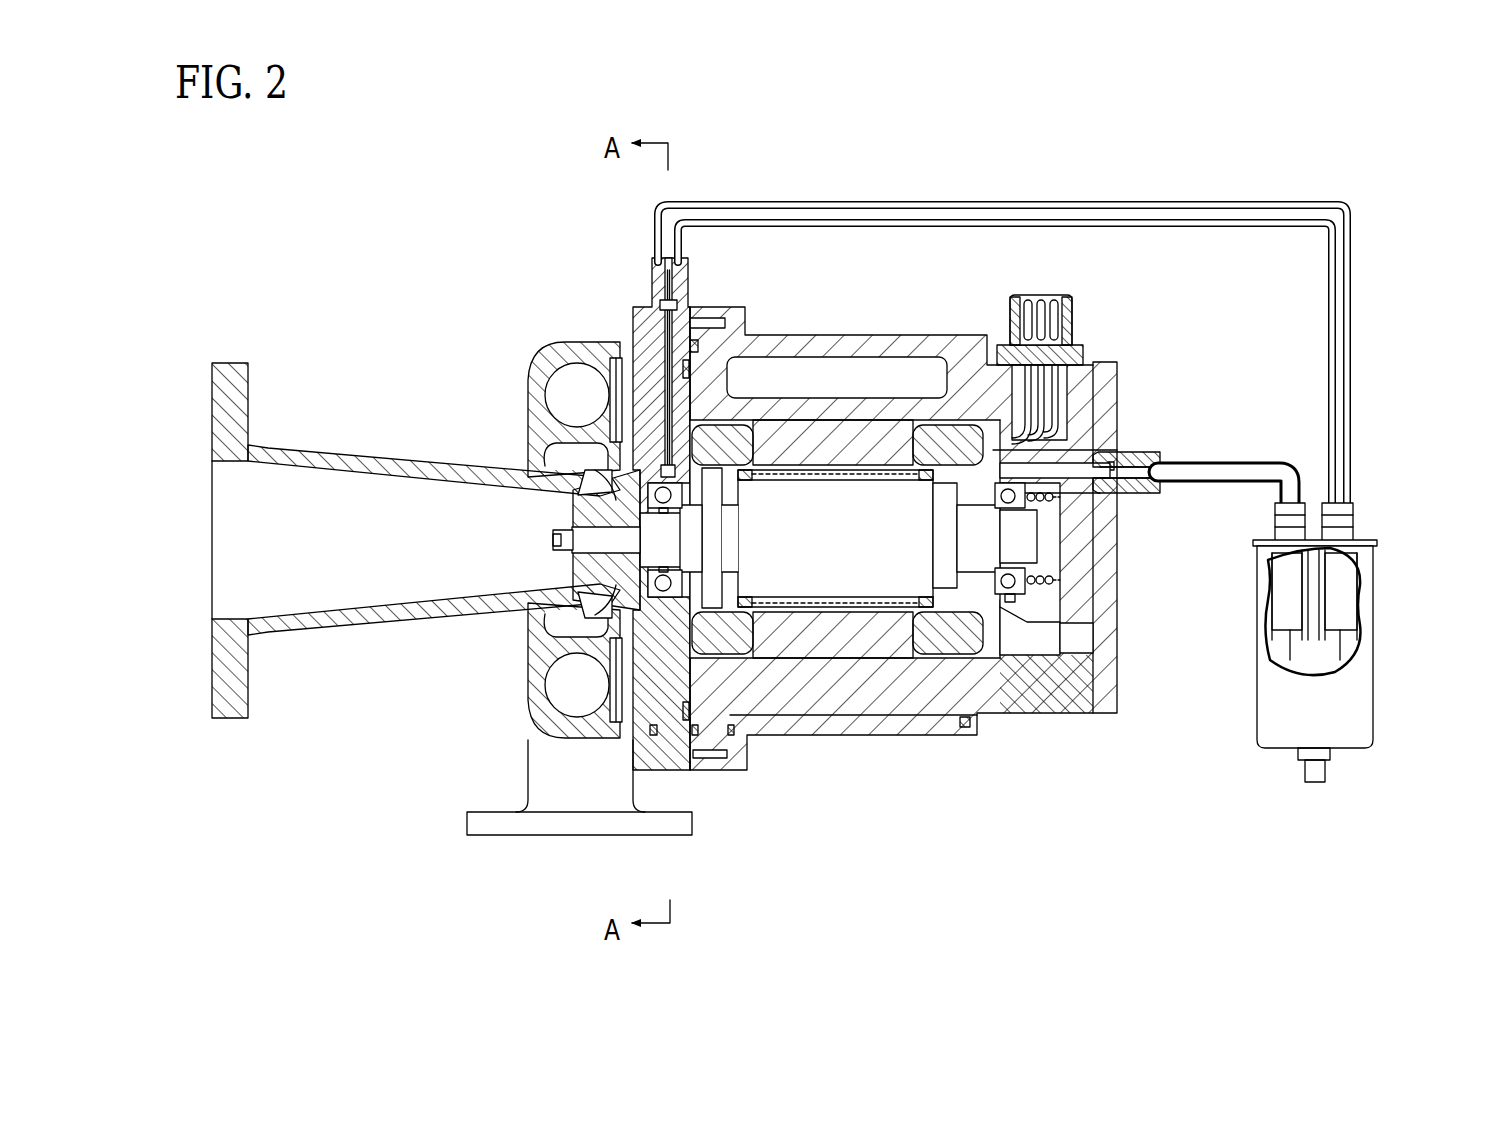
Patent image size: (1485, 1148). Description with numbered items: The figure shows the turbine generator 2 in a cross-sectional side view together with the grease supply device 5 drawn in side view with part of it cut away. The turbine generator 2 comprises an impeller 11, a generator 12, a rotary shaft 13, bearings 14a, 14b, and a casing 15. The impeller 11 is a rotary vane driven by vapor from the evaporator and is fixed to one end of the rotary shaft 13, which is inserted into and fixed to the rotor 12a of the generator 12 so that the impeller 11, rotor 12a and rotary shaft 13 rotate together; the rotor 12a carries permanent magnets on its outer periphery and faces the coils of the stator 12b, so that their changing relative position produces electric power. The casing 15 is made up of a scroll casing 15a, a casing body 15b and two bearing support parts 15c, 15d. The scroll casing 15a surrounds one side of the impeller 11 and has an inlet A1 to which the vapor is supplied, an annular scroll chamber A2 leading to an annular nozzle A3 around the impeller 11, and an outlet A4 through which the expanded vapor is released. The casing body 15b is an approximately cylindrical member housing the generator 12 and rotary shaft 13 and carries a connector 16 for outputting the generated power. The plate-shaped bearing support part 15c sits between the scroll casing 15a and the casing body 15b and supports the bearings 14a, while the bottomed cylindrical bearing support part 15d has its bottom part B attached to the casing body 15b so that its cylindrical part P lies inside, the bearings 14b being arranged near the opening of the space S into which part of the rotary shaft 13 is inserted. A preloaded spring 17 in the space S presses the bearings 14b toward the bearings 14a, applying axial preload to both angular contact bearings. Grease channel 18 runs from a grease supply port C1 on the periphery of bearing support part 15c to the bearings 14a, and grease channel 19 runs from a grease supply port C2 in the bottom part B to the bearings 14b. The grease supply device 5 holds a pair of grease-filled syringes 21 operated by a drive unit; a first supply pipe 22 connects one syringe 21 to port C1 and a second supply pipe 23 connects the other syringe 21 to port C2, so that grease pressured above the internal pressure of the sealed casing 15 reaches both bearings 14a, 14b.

The turbine generator 2 is at (555, 224).
The grease supply device 5 is at (1376, 683).
The impeller 11 is at (556, 518).
The generator 12 is at (982, 825).
The rotor 12a is at (855, 556).
The stator 12b is at (825, 637).
The rotary shaft 13 is at (653, 550).
The bearings 14a is at (662, 590).
The bearings 14b is at (1010, 582).
The casing 15 is at (817, 756).
The scroll casing 15a is at (385, 462).
The casing body 15b is at (972, 378).
The bearing support part 15c is at (642, 365).
The bearing support part 15d is at (1110, 395).
The connector 16 is at (1075, 335).
The preloaded spring 17 is at (1060, 562).
The grease channel 18 is at (690, 388).
The grease channel 19 is at (1065, 462).
The syringes 21 is at (1340, 595).
The first supply pipe 22 is at (1328, 364).
The second supply pipe 23 is at (1245, 462).
The inlet A1 is at (588, 836).
The scroll chamber A2 is at (553, 385).
The nozzle A3 is at (603, 372).
The outlet A4 is at (210, 531).
The bottom part B is at (1112, 686).
The grease supply port C1 is at (687, 287).
The grease supply port C2 is at (1135, 492).
The cylindrical part P is at (1045, 640).
The space S is at (1063, 538).